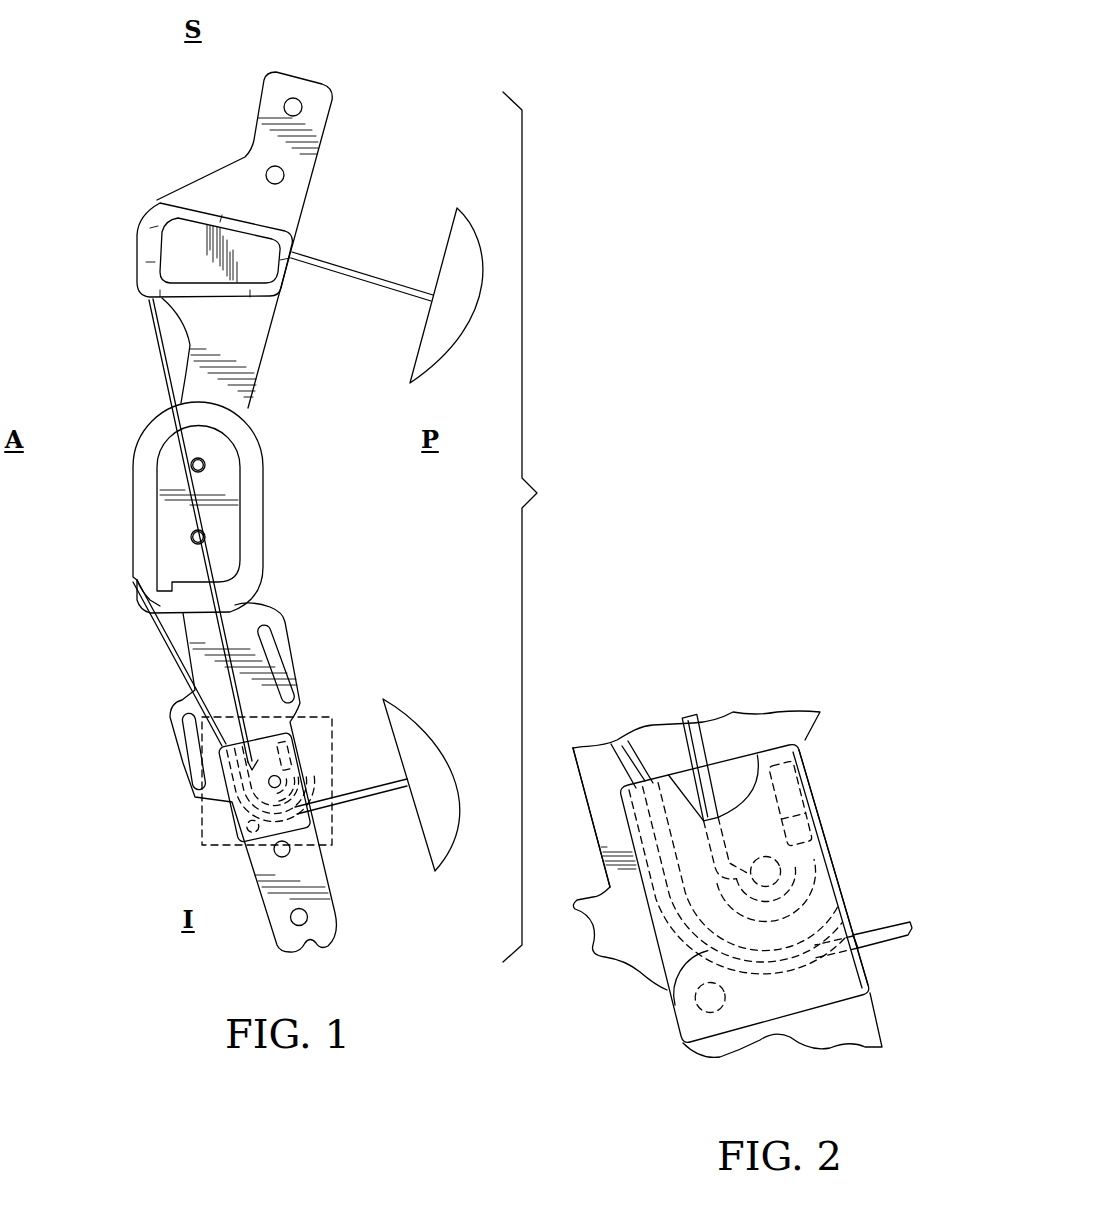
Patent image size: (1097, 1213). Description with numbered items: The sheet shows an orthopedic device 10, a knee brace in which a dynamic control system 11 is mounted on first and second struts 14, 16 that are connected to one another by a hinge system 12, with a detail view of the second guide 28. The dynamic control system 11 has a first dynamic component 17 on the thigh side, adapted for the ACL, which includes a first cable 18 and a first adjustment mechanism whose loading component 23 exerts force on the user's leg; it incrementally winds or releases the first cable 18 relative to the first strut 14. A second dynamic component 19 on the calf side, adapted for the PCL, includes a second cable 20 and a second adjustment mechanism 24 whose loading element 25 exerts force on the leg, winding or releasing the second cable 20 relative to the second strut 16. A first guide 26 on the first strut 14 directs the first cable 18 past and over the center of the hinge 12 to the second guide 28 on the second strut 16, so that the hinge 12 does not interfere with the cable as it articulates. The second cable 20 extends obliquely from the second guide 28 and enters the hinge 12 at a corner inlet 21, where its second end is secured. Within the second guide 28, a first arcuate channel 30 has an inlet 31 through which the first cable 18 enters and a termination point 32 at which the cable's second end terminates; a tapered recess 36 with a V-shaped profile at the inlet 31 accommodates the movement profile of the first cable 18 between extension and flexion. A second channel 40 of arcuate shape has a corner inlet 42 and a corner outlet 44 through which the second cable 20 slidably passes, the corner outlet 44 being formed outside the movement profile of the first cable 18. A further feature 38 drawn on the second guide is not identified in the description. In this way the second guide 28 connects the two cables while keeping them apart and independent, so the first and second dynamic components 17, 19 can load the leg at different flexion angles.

In FIG. 1, the orthopedic device 10 is at (155, 196).
In FIG. 1, the dynamic control system 11 is at (537, 527).
In FIG. 1, the hinge system 12 is at (263, 500).
In FIG. 1, the first strut 14 is at (333, 112).
In FIG. 1, the second strut 16 is at (327, 927).
In FIG. 2, the second strut 16 is at (627, 948).
In FIG. 1, the first dynamic component 17 is at (495, 230).
In FIG. 1, the first cable 18 is at (340, 263).
In FIG. 2, the first cable 18 is at (692, 733).
In FIG. 1, the second dynamic component 19 is at (448, 736).
In FIG. 1, the second cable 20 is at (173, 650).
In FIG. 2, the second cable 20 is at (632, 767).
In FIG. 1, the corner inlet 21 is at (137, 583).
In FIG. 1, the loading component 23 is at (457, 223).
In FIG. 1, the second adjustment mechanism 24 is at (403, 710).
In FIG. 1, the loading element 25 is at (427, 850).
In FIG. 1, the first guide 26 is at (240, 296).
In FIG. 1, the second guide 28 is at (242, 813).
In FIG. 2, the second guide 28 is at (703, 1043).
In FIG. 2, the first arcuate channel 30 is at (733, 907).
In FIG. 2, the inlet 31 is at (788, 783).
In FIG. 2, the termination point 32 is at (793, 787).
In FIG. 2, the tapered recess 36 is at (730, 773).
In FIG. 2, the side wall 38 is at (827, 932).
In FIG. 2, the second channel 40 is at (707, 953).
In FIG. 2, the corner inlet 42 is at (865, 958).
In FIG. 2, the corner outlet 44 is at (575, 748).